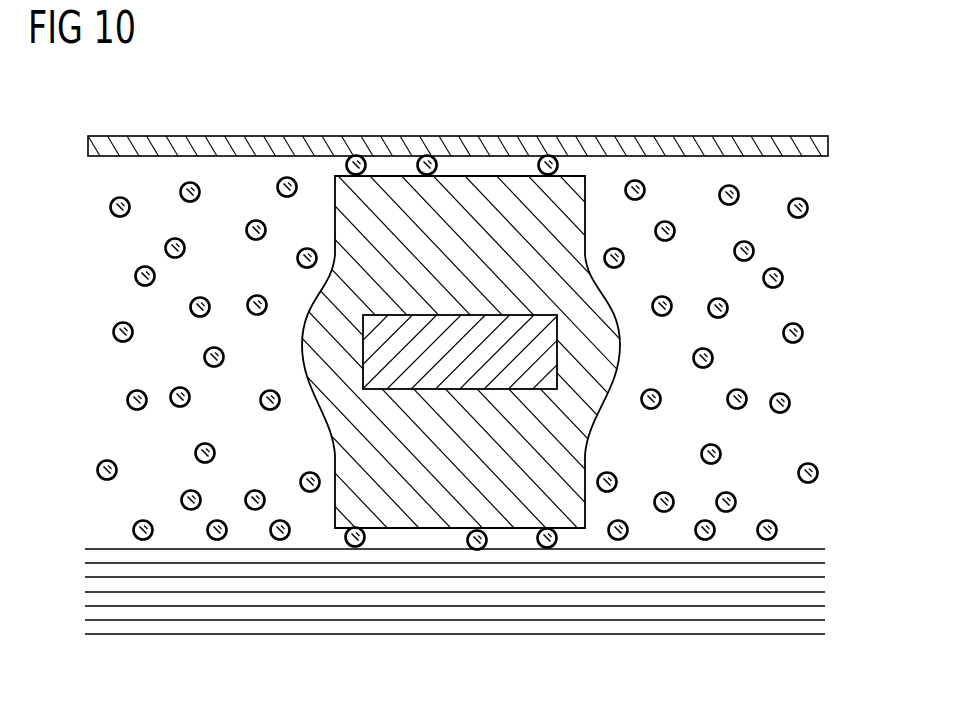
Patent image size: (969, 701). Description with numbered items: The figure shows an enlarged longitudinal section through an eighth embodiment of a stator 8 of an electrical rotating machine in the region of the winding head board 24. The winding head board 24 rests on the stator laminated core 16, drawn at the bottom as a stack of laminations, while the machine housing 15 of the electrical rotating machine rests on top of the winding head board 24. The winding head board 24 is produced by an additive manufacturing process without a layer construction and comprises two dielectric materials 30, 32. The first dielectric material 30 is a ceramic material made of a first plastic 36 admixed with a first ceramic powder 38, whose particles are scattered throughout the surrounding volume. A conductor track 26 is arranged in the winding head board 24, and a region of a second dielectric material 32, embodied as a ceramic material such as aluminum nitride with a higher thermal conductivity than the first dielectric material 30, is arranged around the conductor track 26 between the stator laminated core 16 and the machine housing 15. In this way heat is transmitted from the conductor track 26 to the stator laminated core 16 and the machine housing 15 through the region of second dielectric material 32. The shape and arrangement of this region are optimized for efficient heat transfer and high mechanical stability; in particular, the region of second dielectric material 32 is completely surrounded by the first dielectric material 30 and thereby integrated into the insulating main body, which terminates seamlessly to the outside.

The stator 8 is at (823, 74).
The machine housing 15 is at (298, 135).
The stator laminated core 16 is at (784, 632).
The winding head board 24 is at (701, 186).
The conductor track 26 is at (363, 352).
The first dielectric material 30 is at (110, 248).
The second dielectric material 32 is at (455, 174).
The first plastic 36 is at (183, 172).
The first ceramic powder 38 is at (548, 158).